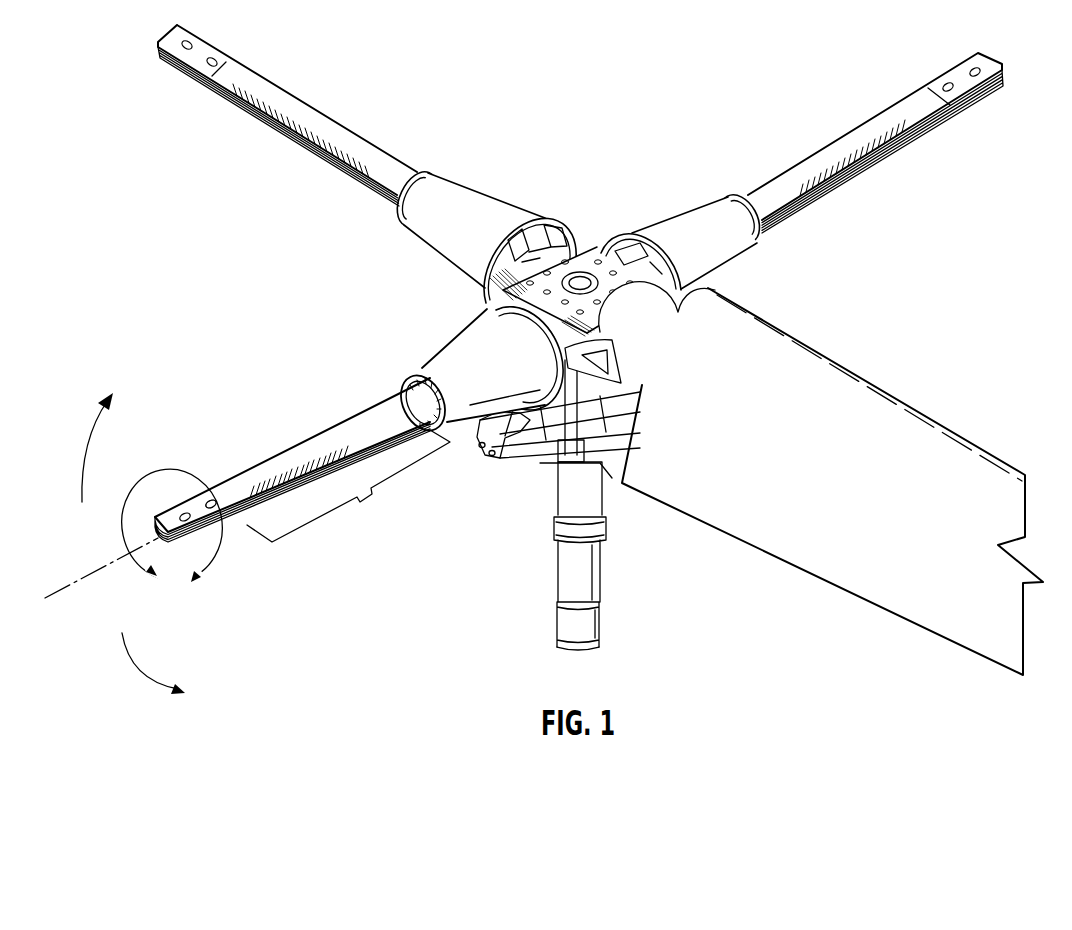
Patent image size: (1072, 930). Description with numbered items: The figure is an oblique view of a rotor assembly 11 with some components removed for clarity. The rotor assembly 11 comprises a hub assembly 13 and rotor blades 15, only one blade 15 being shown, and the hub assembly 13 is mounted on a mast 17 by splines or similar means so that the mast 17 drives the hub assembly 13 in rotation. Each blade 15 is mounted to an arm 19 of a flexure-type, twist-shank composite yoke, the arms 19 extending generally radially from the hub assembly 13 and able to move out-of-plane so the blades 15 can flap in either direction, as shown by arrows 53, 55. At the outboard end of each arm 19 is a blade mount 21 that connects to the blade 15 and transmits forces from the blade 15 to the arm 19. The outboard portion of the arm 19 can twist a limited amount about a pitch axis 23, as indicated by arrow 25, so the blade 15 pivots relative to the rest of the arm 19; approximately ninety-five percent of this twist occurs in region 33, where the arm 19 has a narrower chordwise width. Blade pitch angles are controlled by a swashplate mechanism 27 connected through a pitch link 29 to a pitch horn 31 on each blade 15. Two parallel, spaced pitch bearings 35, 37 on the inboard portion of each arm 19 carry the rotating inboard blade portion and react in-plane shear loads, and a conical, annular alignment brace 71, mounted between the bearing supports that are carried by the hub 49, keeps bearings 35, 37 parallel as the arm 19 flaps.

The rotor assembly 11 is at (544, 359).
The hub assembly 13 is at (585, 248).
The rotor blade 15 is at (780, 540).
The mast 17 is at (567, 559).
The arm 19 is at (330, 418).
The blade mount 21 is at (212, 500).
The pitch axis 23 is at (112, 566).
The arrow 25 is at (218, 547).
The swashplate mechanism 27 is at (536, 456).
The pitch link 29 is at (506, 454).
The pitch horn 31 is at (602, 336).
The region 33 is at (348, 486).
The pitch bearing 35 is at (396, 378).
The pitch bearing 37 is at (508, 316).
The hub 49 is at (612, 255).
The arrow 53 is at (93, 456).
The arrow 55 is at (150, 665).
The alignment brace 71 is at (454, 356).